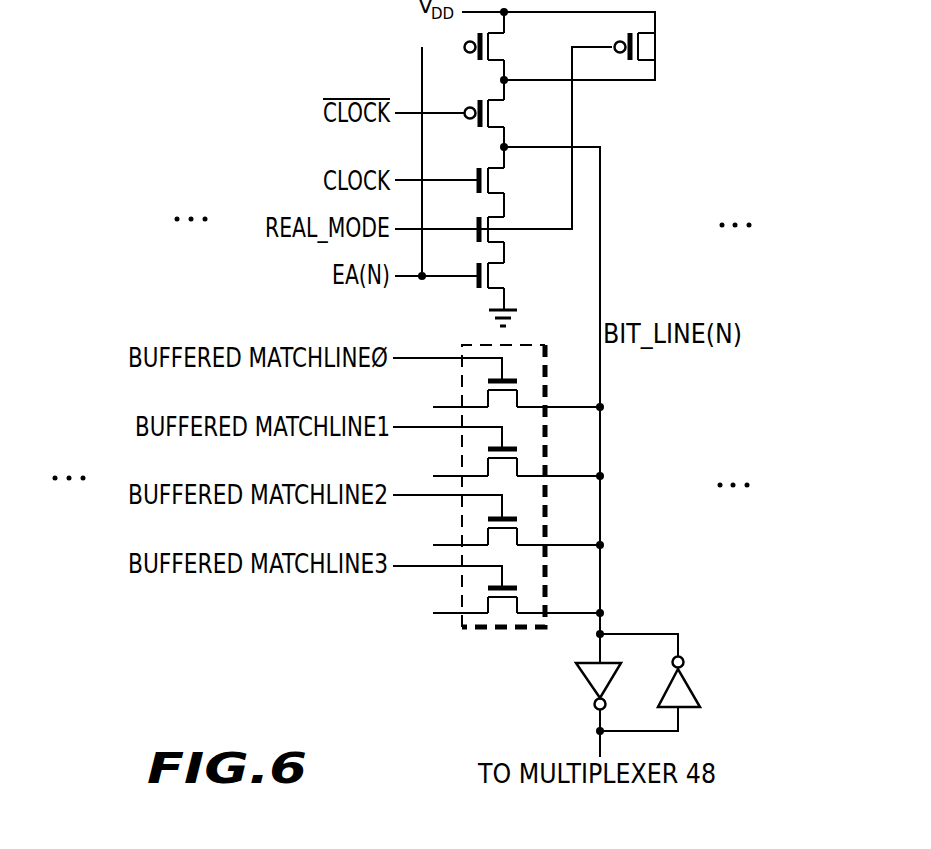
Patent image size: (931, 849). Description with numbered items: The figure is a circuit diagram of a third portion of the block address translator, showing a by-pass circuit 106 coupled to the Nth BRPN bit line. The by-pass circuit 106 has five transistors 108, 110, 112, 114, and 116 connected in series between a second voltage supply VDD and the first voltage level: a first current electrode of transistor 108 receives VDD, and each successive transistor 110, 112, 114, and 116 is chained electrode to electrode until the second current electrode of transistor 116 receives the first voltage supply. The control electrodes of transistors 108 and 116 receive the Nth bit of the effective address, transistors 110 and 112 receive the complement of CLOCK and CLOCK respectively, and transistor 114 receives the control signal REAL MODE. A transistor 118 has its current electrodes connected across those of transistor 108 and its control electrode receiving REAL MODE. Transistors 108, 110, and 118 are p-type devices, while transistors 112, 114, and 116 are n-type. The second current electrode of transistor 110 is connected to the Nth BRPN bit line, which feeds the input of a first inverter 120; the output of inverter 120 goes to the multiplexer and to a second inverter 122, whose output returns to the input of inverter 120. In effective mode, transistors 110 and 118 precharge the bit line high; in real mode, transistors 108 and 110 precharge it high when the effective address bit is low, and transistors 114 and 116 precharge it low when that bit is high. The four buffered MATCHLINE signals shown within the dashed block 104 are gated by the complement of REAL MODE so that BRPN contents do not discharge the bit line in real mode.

The matchline transistor block 104 is at (520, 345).
The by-pass circuit 106 is at (261, 95).
The transistor 108 is at (500, 49).
The transistor 110 is at (482, 98).
The transistor 112 is at (481, 168).
The transistor 114 is at (481, 217).
The transistor 116 is at (481, 263).
The transistor 118 is at (648, 49).
The first inverter 120 is at (583, 677).
The second inverter 122 is at (690, 687).